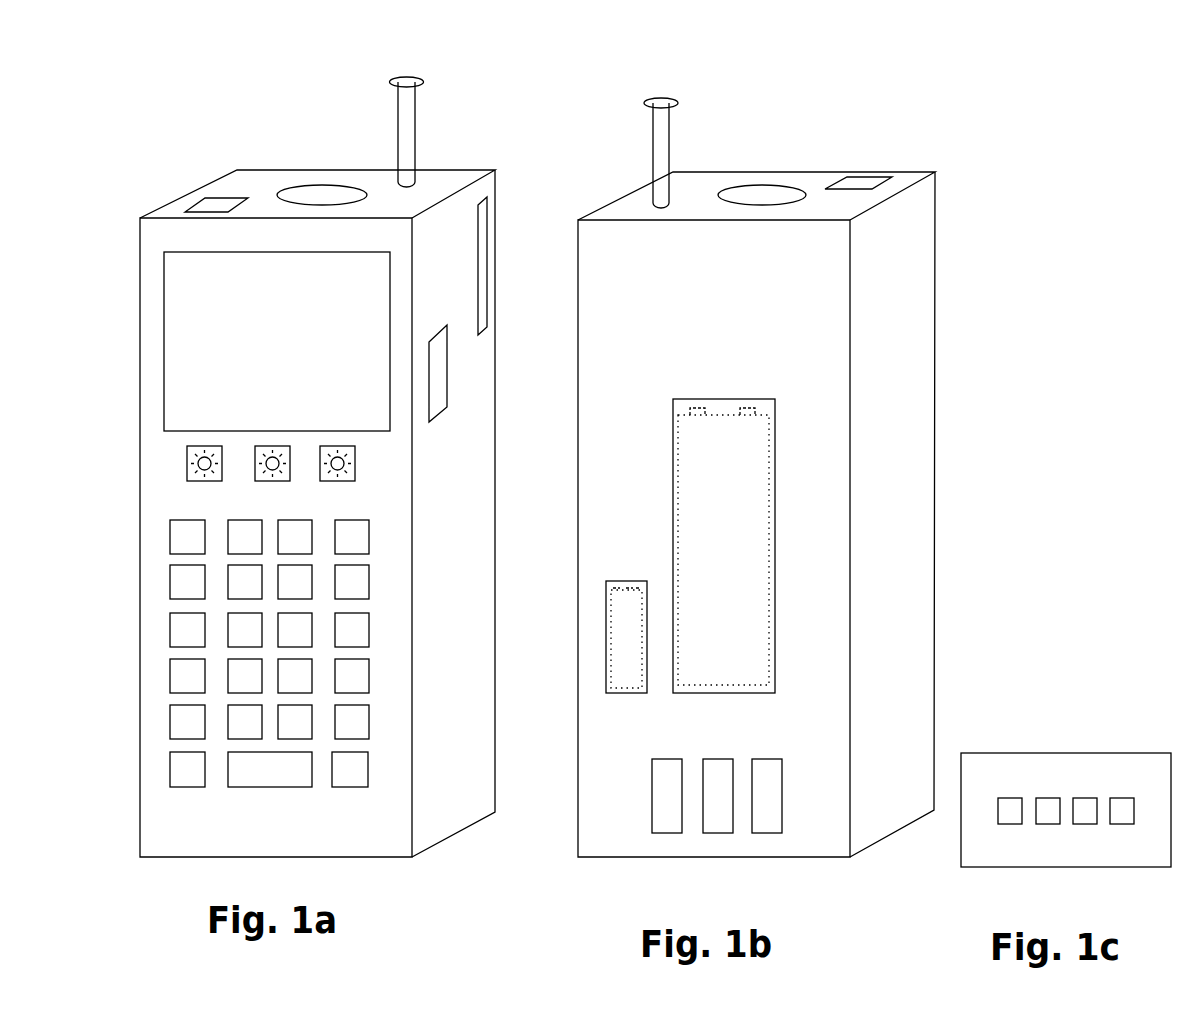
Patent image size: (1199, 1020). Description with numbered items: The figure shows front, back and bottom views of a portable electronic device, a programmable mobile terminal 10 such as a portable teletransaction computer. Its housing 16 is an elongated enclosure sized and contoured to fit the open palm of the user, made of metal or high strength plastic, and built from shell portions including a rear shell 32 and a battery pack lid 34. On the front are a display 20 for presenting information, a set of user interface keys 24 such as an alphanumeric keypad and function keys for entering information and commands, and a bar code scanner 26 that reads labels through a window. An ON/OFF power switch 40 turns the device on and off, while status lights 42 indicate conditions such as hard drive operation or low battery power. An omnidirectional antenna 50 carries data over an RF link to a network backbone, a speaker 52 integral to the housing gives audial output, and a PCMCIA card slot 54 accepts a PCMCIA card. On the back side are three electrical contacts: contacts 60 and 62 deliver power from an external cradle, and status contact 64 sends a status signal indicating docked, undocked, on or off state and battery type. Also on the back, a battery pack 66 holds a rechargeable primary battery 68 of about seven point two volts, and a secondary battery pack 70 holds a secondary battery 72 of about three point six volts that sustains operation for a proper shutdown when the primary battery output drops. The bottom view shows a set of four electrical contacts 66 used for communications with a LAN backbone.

In FIG. 1A, the mobile terminal 10 is at (141, 152).
In FIG. 1A, the housing 16 is at (452, 465).
In FIG. 1B, the housing 16 is at (625, 513).
In FIG. 1A, the display 20 is at (208, 328).
In FIG. 1A, the user interface keys 24 is at (190, 819).
In FIG. 1A, the bar code scanner 26 is at (315, 192).
In FIG. 1B, the bar code scanner 26 is at (773, 198).
In FIG. 1B, the rear shell 32 is at (822, 689).
In FIG. 1B, the battery pack lid 34 is at (775, 592).
In FIG. 1A, the ON/OFF power switch 40 is at (437, 392).
In FIG. 1A, the status lights 42 is at (172, 471).
In FIG. 1A, the antenna 50 is at (413, 135).
In FIG. 1B, the antenna 50 is at (667, 135).
In FIG. 1A, the speaker 52 is at (208, 208).
In FIG. 1B, the speaker 52 is at (858, 185).
In FIG. 1A, the PCMCIA card slot 54 is at (485, 240).
In FIG. 1B, the electrical contact 60 is at (663, 817).
In FIG. 1B, the electrical contact 62 is at (718, 817).
In FIG. 1B, the status contact 64 is at (767, 817).
In FIG. 1B, the electrical contacts / battery pack 66 is at (772, 465).
In FIG. 1C, the electrical contacts / battery pack 66 is at (1017, 836).
In FIG. 1B, the rechargeable battery 68 is at (757, 520).
In FIG. 1B, the secondary battery pack 70 is at (607, 640).
In FIG. 1B, the secondary battery 72 is at (625, 650).